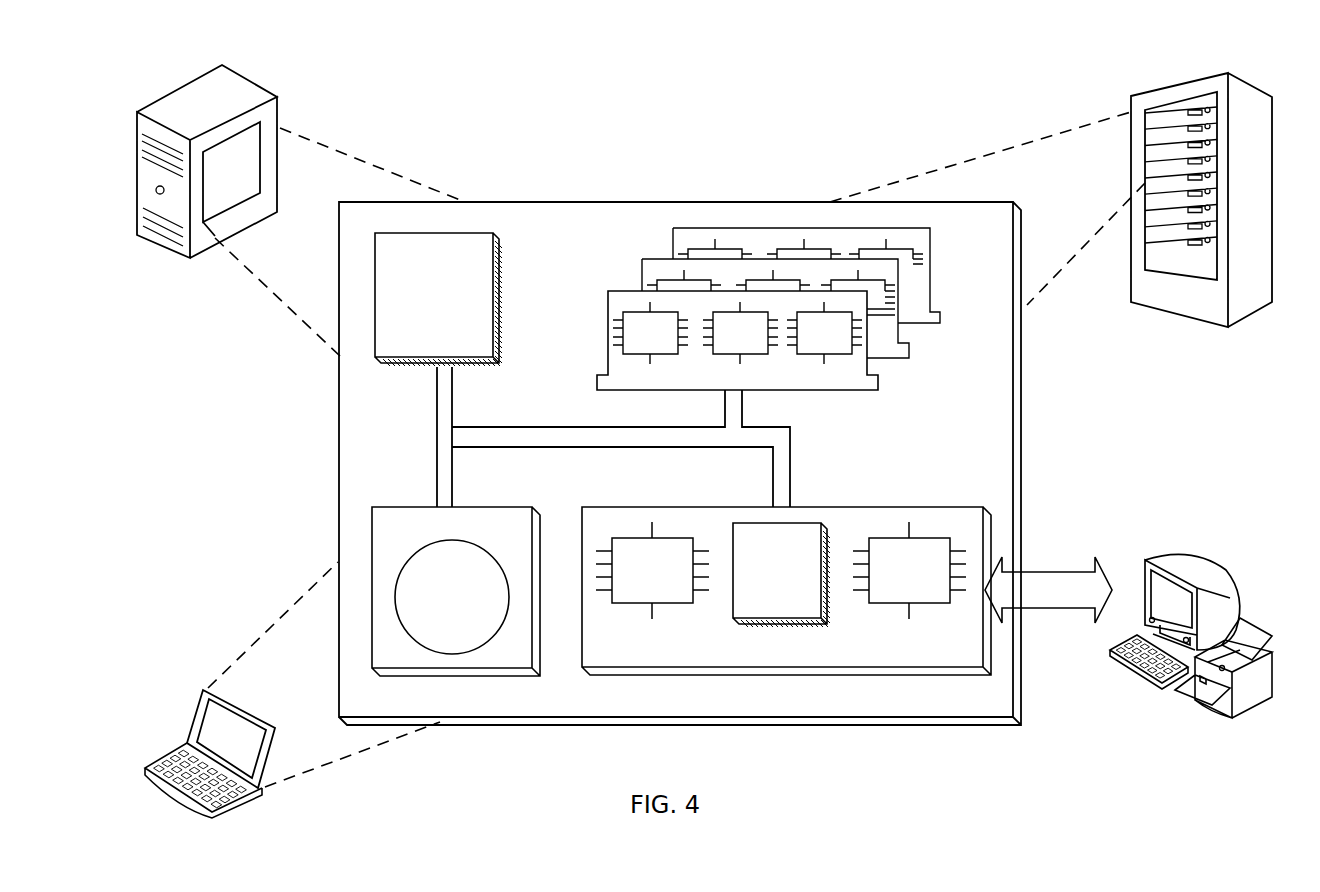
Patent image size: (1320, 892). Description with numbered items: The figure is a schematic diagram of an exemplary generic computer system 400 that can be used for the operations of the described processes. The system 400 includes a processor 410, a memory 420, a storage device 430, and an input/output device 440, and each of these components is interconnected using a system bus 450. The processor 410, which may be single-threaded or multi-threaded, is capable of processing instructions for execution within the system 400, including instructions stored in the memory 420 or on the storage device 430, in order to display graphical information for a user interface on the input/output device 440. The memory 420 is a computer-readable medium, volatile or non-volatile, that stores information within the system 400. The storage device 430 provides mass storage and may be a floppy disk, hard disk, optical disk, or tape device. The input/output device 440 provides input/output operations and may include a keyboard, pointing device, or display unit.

The system 400 is at (680, 393).
The processor 410 is at (438, 299).
The memory 420 is at (944, 359).
The storage device 430 is at (456, 591).
The input/output device 440 is at (1143, 556).
The system bus 450 is at (610, 443).